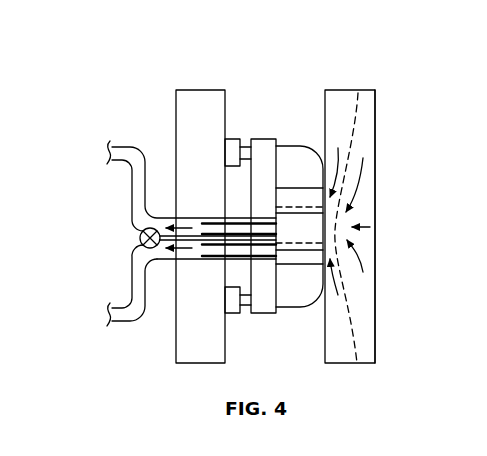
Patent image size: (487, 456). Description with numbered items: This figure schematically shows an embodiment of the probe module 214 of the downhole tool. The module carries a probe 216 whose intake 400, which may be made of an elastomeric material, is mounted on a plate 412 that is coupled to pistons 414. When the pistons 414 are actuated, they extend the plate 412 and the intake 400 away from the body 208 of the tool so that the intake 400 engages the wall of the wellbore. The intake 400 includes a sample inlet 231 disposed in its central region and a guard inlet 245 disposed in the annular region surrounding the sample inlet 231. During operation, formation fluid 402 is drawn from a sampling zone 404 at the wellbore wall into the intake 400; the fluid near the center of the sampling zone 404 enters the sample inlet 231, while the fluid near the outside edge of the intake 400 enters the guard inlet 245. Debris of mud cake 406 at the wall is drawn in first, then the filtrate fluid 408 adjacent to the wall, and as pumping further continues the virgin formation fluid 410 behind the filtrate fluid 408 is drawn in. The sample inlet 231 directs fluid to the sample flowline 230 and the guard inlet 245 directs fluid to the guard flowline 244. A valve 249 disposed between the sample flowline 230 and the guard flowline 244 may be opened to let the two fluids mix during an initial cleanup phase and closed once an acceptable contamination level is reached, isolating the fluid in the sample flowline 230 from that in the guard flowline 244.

The body 208 is at (199, 90).
The probe module 214 is at (362, 184).
The probe 216 is at (299, 240).
The sample flowline 230 is at (116, 147).
The sample inlet 231 is at (297, 228).
The guard flowline 244 is at (122, 330).
The guard inlet 245 is at (317, 275).
The valve 249 is at (142, 232).
The intake 400 is at (323, 300).
The formation fluid 402 is at (360, 215).
The sampling zone 404 is at (347, 235).
The mud cake 406 is at (322, 130).
The filtrate fluid 408 is at (345, 108).
The virgin formation fluid 410 is at (368, 112).
The plate 412 is at (257, 137).
The pistons 414 is at (236, 139).